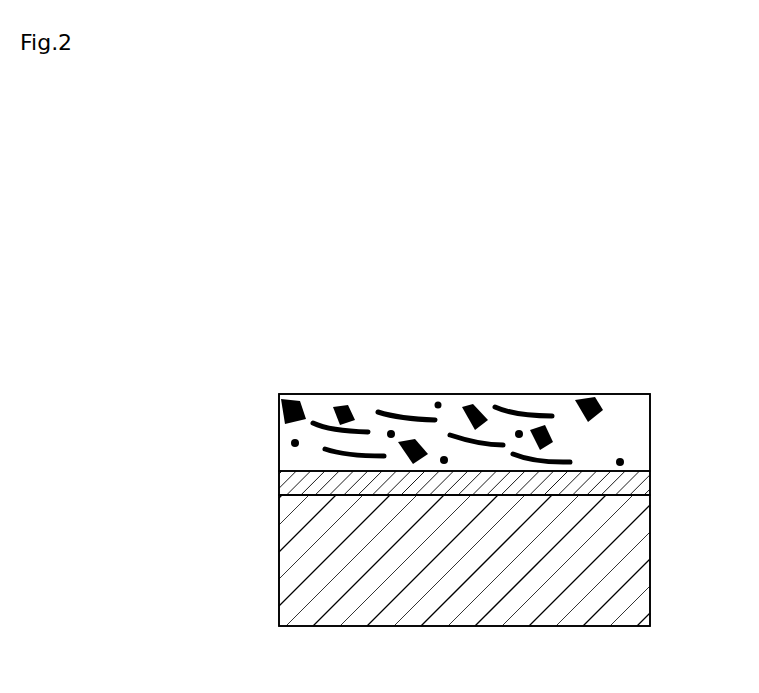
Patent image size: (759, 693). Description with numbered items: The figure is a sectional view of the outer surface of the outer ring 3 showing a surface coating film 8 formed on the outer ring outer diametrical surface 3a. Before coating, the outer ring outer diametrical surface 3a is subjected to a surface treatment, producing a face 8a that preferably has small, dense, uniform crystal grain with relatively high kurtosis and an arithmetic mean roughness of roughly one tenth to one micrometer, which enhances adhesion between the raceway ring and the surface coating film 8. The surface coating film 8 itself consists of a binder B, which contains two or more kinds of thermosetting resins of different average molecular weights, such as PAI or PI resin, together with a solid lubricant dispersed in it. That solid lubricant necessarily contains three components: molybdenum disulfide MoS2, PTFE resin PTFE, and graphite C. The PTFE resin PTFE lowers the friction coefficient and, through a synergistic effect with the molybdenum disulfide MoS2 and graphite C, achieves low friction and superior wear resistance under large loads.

The binder B is at (637, 432).
The surface coating film 8 is at (291, 432).
The face subjected to the surface treatment 8a is at (283, 480).
The outer ring 3 is at (305, 561).
The outer ring outer diametrical surface 3a is at (617, 496).
The graphite C is at (298, 401).
The PTFE resin PTFE is at (436, 402).
The molybdenum disulfide MoS2 is at (519, 412).